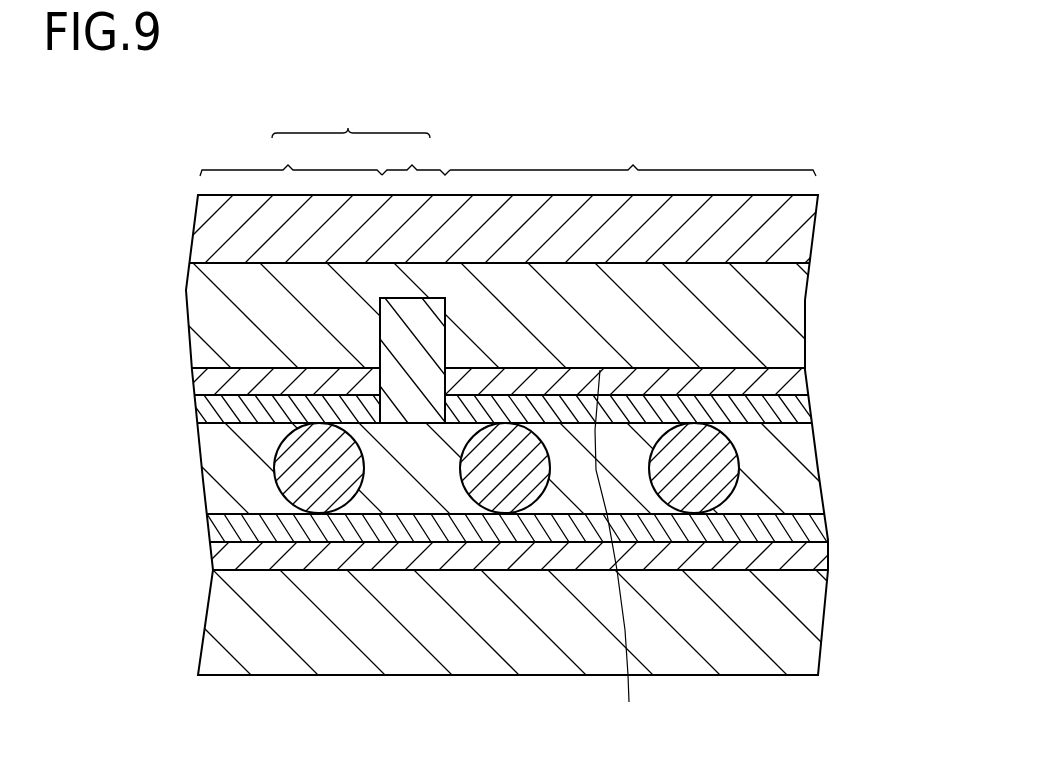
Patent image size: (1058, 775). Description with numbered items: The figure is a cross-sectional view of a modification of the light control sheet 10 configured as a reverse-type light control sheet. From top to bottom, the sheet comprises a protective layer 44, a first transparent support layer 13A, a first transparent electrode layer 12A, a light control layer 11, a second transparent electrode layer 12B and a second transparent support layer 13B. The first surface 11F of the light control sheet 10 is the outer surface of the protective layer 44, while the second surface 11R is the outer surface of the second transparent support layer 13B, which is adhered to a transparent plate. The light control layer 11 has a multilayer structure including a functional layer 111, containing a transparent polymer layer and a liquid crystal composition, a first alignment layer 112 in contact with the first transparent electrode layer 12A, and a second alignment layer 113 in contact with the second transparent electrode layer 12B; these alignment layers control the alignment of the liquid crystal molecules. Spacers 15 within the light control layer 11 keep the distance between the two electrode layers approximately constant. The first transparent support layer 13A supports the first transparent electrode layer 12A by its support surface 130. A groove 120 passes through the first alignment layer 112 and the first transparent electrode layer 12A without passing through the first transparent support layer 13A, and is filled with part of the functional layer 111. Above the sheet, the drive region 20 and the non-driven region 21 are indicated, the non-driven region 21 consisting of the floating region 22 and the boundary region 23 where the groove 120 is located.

The light control sheet 10 is at (203, 153).
The protective layer 44 is at (190, 242).
The first transparent support layer 13A is at (806, 318).
The first transparent electrode layer 12A is at (806, 377).
The first alignment layer 112 is at (810, 404).
The functional layer 111 is at (505, 468).
The second alignment layer 113 is at (826, 530).
The light control layer 11 is at (527, 468).
The second transparent electrode layer 12B is at (828, 552).
The second transparent support layer 13B is at (826, 620).
The first surface 11F is at (782, 194).
The second surface 11R is at (348, 676).
The spacer 15 is at (280, 440).
The groove 120 is at (370, 336).
The support surface 130 is at (621, 553).
The drive region 20 is at (633, 156).
The non-driven region 21 is at (351, 119).
The floating region 22 is at (291, 158).
The boundary region 23 is at (416, 157).